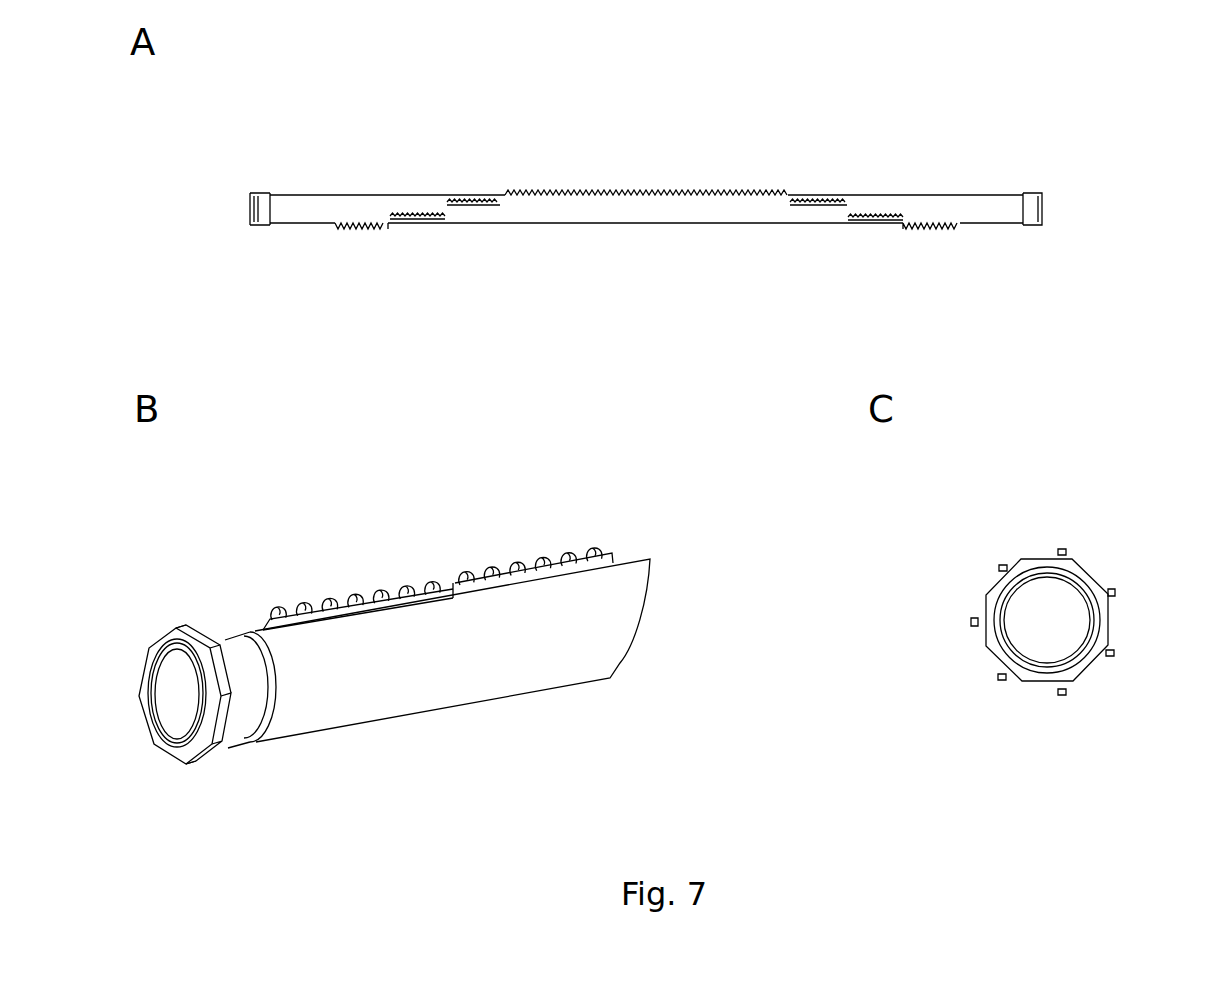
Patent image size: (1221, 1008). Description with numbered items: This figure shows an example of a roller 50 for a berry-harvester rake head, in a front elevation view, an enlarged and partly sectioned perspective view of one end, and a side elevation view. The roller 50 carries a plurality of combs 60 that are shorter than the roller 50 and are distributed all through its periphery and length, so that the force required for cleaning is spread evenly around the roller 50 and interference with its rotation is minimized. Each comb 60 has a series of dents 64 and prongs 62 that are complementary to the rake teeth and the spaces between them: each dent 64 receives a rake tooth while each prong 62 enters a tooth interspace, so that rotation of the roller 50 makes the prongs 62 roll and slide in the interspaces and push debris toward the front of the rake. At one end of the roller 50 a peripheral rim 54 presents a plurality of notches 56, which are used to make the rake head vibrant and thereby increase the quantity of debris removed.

The roller 50 is at (902, 697).
The peripheral rim 54 is at (250, 203).
The notches 56 is at (216, 661).
The combs 60 is at (760, 194).
The prongs 62 is at (321, 609).
The dents 64 is at (415, 600).